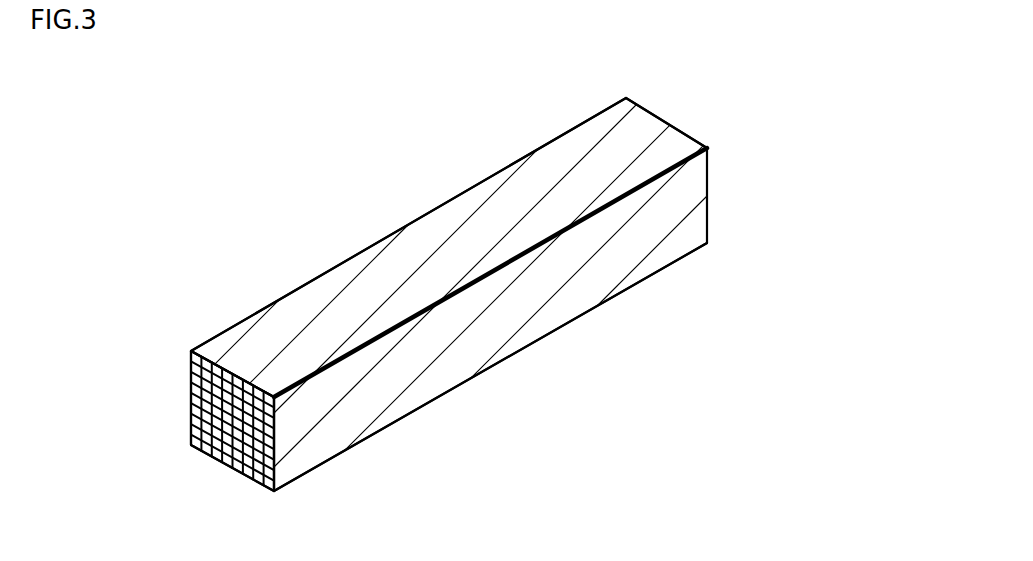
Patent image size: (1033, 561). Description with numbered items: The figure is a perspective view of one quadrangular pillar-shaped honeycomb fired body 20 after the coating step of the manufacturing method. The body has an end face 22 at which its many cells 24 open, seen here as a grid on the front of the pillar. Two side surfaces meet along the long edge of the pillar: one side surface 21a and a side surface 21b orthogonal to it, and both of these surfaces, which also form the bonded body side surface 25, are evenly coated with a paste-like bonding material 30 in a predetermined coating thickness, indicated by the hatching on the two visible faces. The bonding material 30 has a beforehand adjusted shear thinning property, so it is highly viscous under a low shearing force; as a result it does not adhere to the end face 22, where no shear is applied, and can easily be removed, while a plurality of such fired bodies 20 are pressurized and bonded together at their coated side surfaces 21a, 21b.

The honeycomb fired body 20 is at (691, 85).
The side surface 21a is at (222, 328).
The side surface 21b is at (393, 418).
The bonded body side surface 25 is at (666, 123).
The end face 22 is at (192, 403).
The cell 24 is at (225, 460).
The bonding material 30 is at (445, 217).